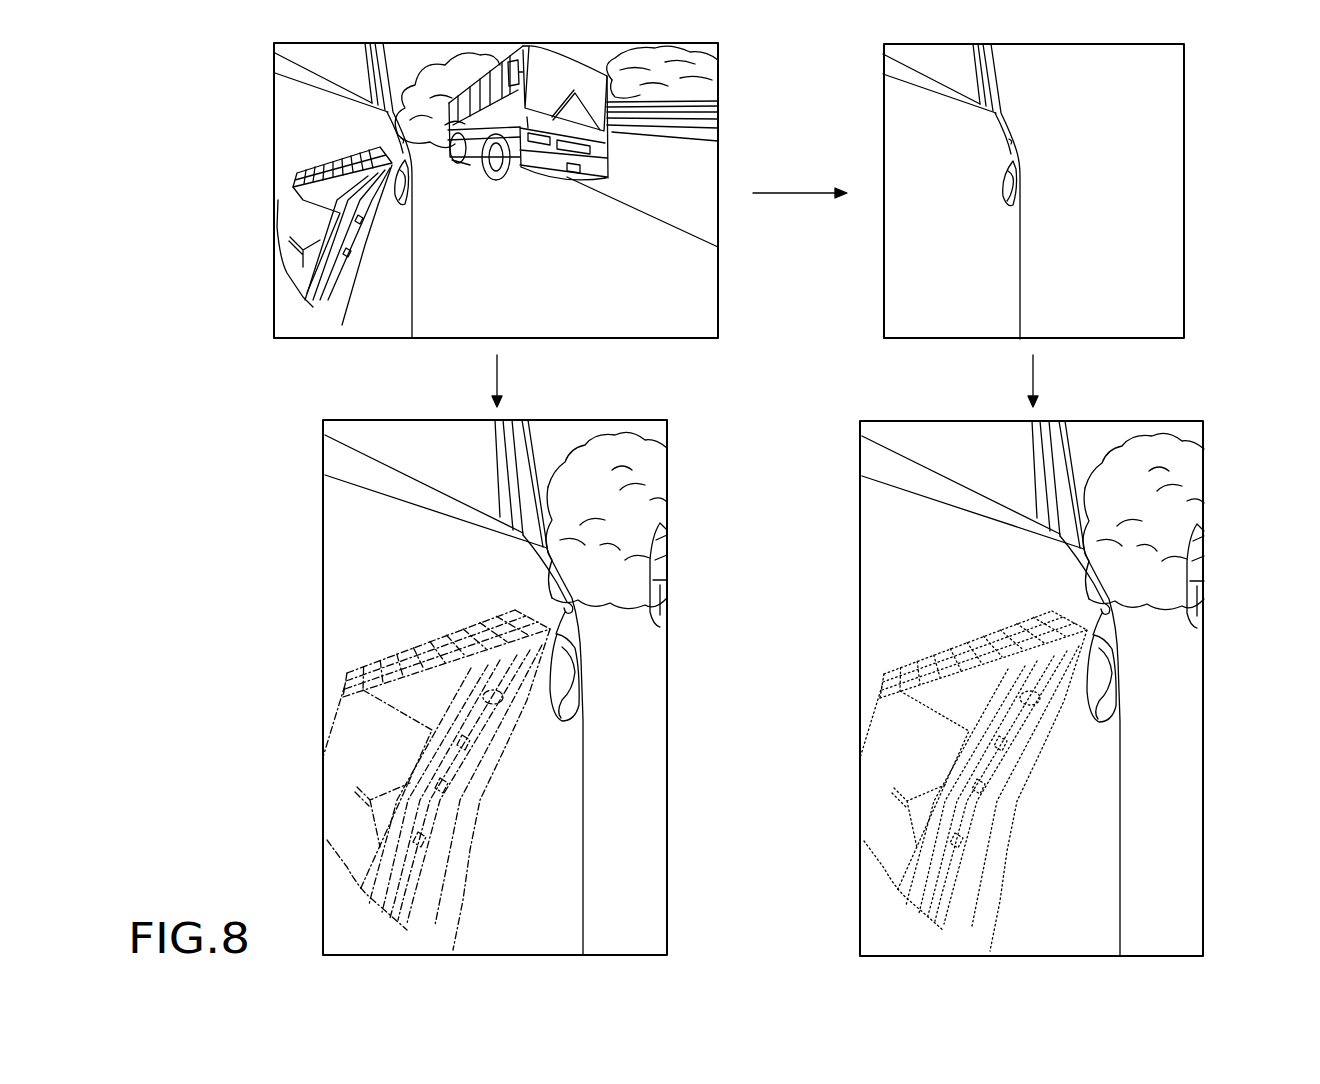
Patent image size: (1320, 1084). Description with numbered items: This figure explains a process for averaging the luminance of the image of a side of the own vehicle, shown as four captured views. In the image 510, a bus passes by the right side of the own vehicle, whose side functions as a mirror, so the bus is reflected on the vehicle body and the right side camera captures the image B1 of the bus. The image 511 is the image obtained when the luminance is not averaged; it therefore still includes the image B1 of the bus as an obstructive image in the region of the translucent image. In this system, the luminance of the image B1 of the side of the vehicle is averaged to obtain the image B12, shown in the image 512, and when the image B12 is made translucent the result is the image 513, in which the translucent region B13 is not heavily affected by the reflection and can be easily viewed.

The image 510 is at (720, 75).
The image 511 is at (668, 720).
The image 512 is at (1186, 156).
The image 513 is at (1205, 712).
The image of the bus B1 is at (292, 137).
The image B12 is at (901, 259).
The transparently displayed other vehicle image B13 is at (876, 583).